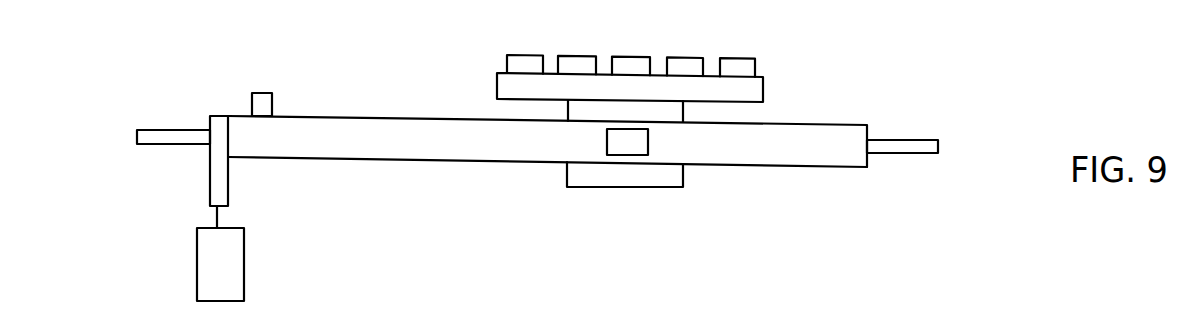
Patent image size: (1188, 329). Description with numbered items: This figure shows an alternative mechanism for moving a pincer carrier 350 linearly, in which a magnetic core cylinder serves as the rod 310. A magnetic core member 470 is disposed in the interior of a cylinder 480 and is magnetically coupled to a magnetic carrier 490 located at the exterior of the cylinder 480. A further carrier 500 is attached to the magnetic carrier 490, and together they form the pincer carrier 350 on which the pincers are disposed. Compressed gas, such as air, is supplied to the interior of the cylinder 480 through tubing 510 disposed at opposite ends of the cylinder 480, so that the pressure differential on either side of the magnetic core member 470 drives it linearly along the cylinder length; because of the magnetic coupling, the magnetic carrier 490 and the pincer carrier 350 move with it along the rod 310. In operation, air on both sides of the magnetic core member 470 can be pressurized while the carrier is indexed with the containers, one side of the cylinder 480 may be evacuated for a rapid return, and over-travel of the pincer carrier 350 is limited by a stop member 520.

The rod 310 is at (838, 172).
The pincer carrier 350 is at (452, 94).
The magnetic core member 470 is at (608, 138).
The cylinder 480 is at (327, 158).
The magnetic carrier 490 is at (620, 181).
The further carrier 500 is at (757, 93).
The tubing 510 is at (163, 144).
The stop member 520 is at (248, 103).